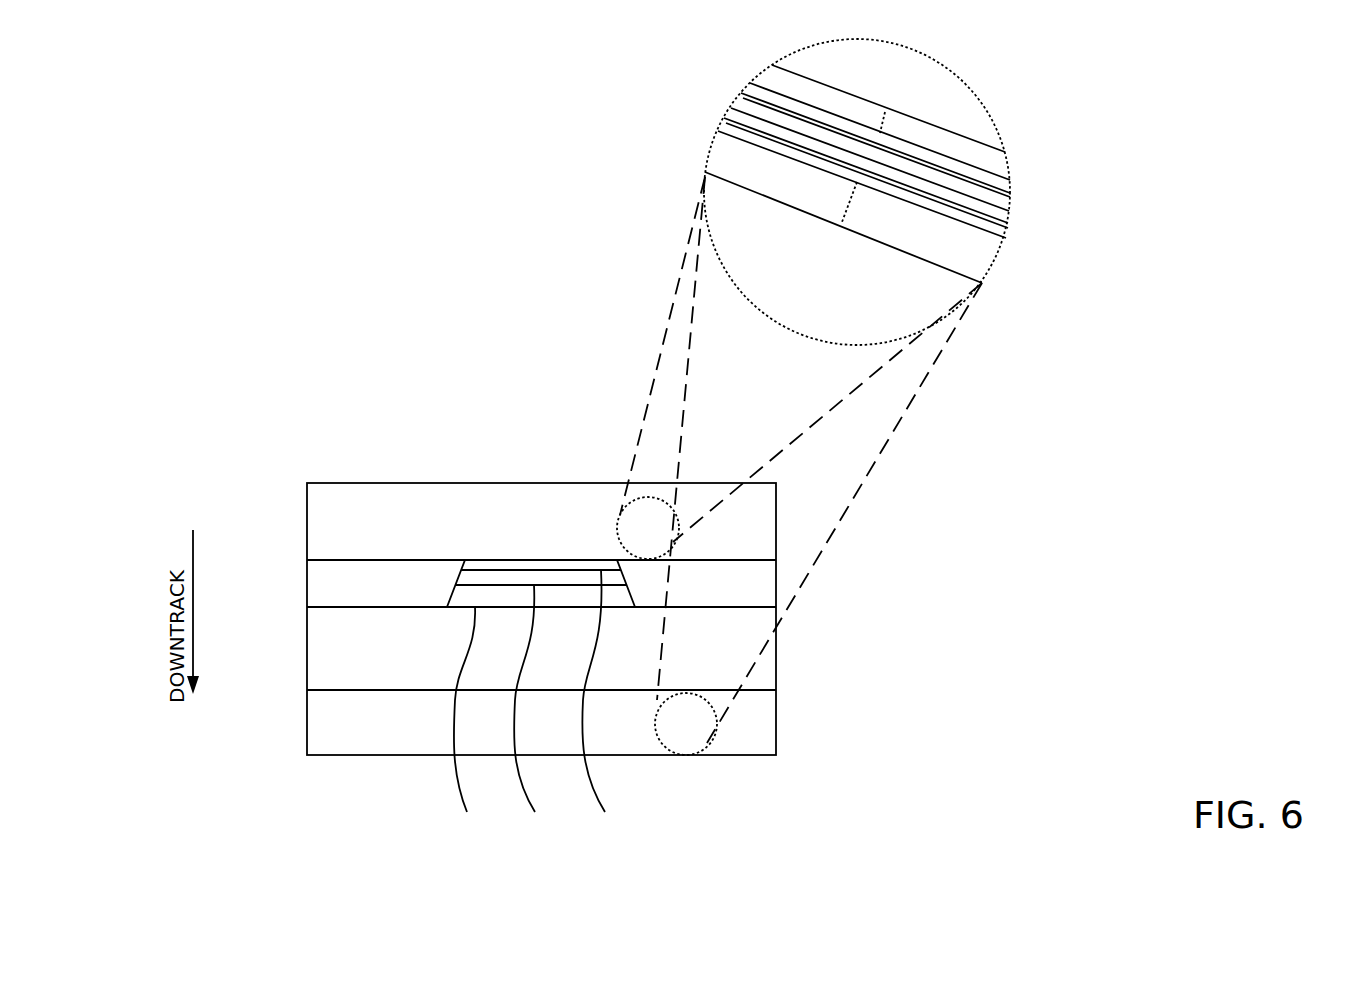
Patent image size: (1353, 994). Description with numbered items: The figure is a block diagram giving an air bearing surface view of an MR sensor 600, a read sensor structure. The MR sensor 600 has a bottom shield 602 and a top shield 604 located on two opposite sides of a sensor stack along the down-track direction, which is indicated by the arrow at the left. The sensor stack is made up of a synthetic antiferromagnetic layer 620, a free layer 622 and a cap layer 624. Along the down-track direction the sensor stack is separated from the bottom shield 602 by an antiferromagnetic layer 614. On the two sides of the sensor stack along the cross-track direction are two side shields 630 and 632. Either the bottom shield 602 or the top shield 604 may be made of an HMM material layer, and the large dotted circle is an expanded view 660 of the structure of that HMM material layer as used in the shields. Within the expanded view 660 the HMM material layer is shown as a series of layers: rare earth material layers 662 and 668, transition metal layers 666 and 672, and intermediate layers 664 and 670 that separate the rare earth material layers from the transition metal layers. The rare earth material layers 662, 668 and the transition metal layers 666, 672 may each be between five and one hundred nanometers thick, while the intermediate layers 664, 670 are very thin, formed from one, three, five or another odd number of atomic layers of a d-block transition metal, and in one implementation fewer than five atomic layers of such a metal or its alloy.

The MR sensor 600 is at (243, 112).
The bottom shield 602 is at (307, 740).
The top shield 604 is at (307, 533).
The antiferromagnetic (AFM) layer 614 is at (307, 670).
The synthetic antiferromagnetic (SAF) layer 620 is at (467, 722).
The free layer 622 is at (534, 711).
The cap layer 624 is at (603, 703).
The side shield 630 is at (307, 584).
The side shield 632 is at (776, 570).
The expanded view 660 is at (982, 283).
The rare earth material layer 662 is at (1010, 180).
The intermediate layer 664 is at (1010, 195).
The transition metal layer 666 is at (1010, 207).
The rare earth material layer 668 is at (1010, 218).
The intermediate layer 670 is at (1008, 228).
The transition metal layer 672 is at (1006, 238).